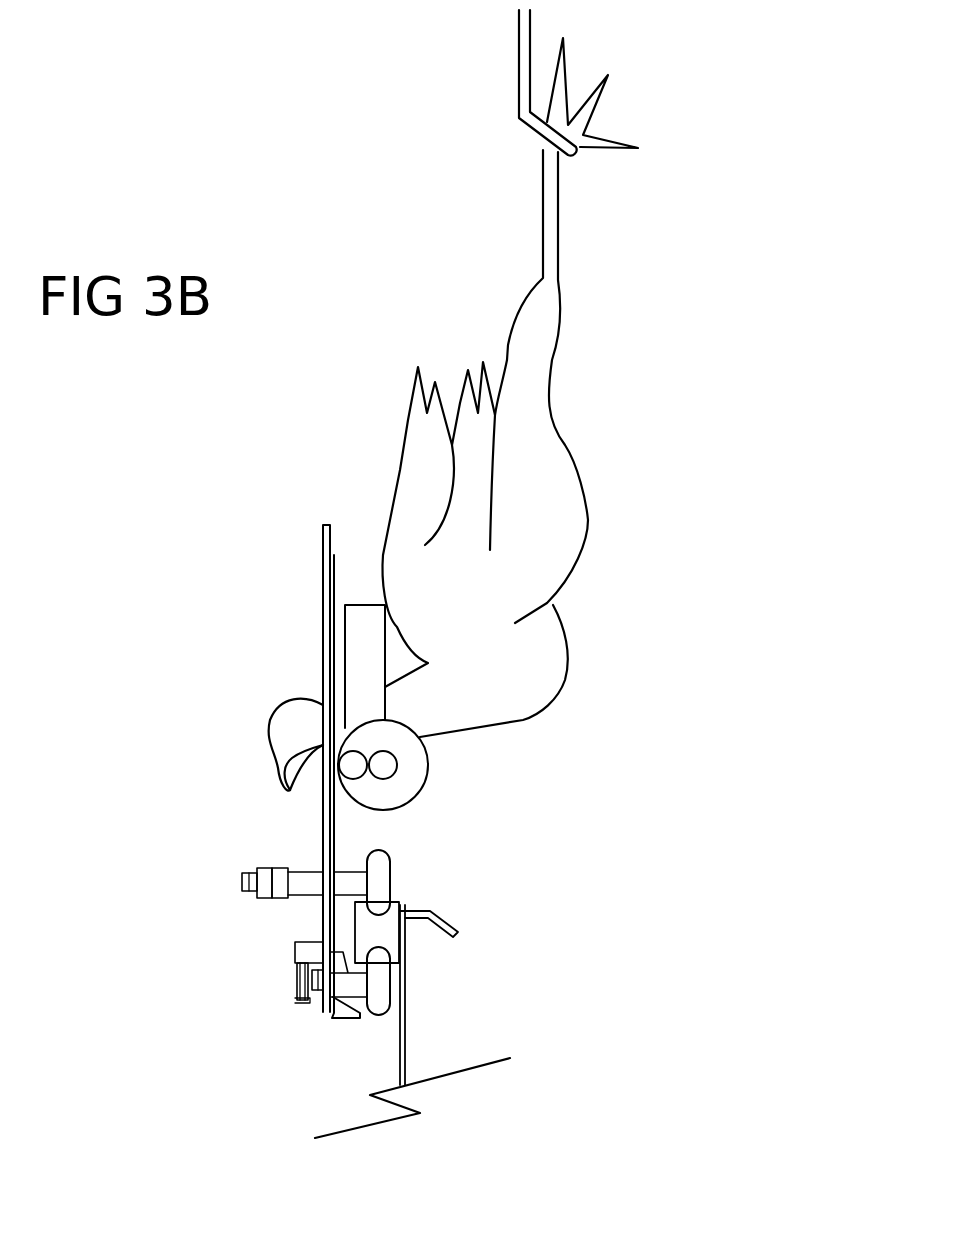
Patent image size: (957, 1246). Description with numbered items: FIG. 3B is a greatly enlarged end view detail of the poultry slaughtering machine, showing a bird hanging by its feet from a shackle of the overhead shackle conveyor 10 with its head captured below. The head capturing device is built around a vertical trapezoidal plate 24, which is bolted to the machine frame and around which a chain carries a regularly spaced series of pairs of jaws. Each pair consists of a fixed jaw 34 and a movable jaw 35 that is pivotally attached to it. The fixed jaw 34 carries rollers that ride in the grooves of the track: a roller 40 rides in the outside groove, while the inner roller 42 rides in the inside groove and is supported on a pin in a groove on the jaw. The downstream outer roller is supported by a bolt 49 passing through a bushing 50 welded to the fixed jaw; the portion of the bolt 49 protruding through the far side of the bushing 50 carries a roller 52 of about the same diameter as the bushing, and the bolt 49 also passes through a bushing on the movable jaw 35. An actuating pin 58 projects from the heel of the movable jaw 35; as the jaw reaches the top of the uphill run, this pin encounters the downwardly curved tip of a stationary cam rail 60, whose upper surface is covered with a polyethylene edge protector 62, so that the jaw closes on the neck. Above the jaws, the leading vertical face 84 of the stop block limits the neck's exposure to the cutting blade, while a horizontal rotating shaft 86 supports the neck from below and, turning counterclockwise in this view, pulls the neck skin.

The overhead shackle conveyor 10 is at (515, 63).
The trapezoidal plate 24 is at (387, 1017).
The fixed jaw 34 is at (338, 555).
The movable jaw 35 is at (318, 525).
The roller 40 is at (390, 882).
The inner roller 42 is at (383, 933).
The bolt 49 is at (240, 880).
The bushing 50 is at (287, 865).
The roller 52 is at (257, 867).
The actuating pin 58 is at (288, 955).
The stationary cam rail 60 is at (302, 1008).
The edge protector 62 is at (288, 975).
The leading vertical face 84 is at (367, 603).
The horizontal rotating shaft 86 is at (352, 782).